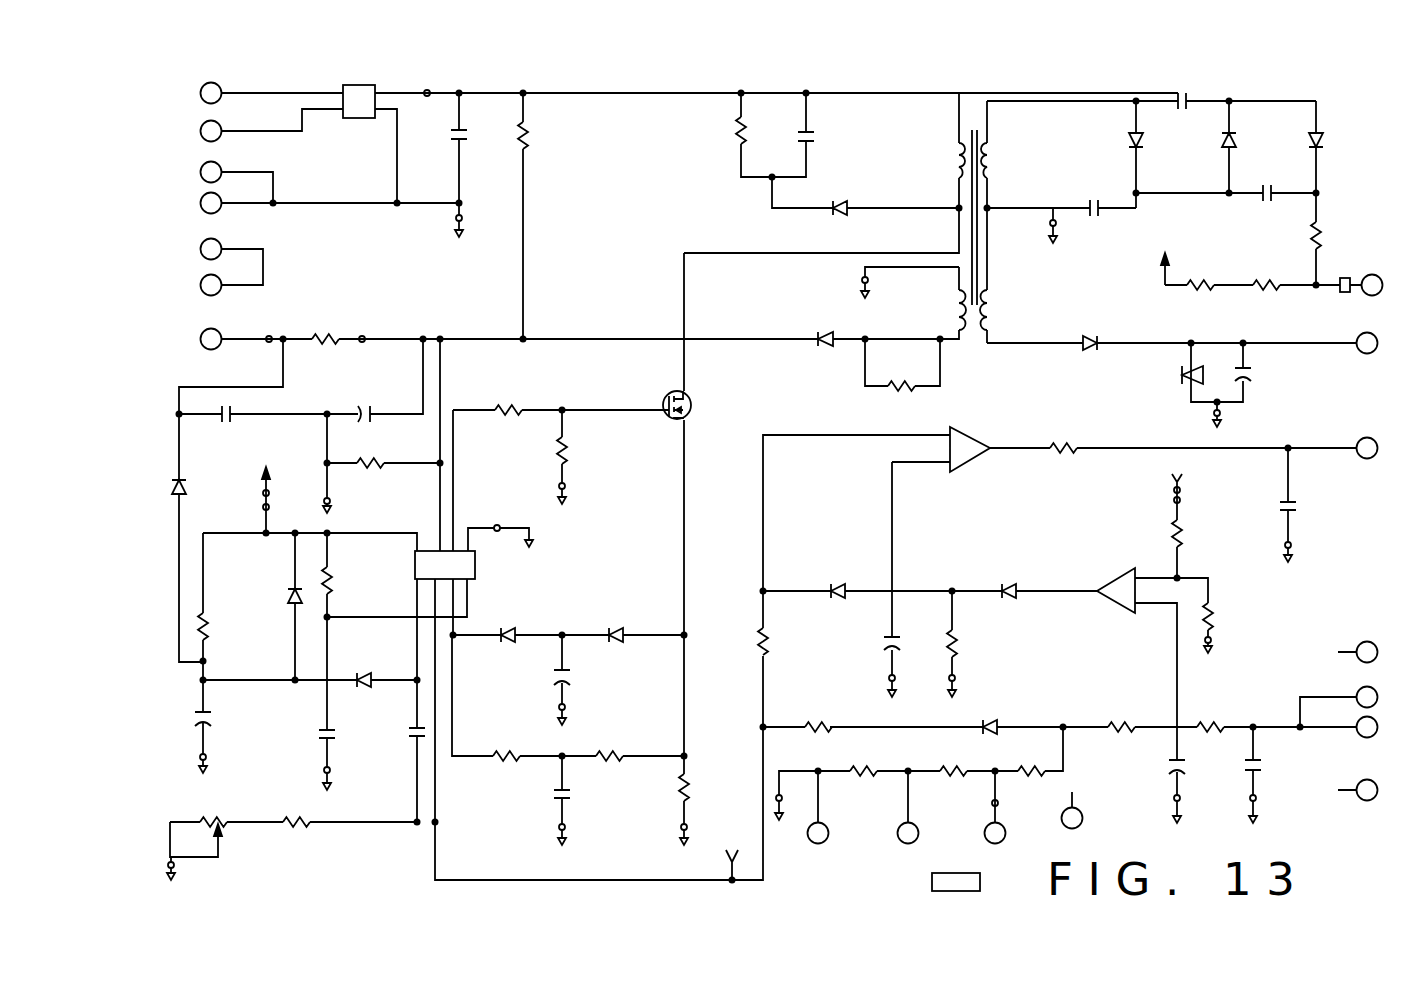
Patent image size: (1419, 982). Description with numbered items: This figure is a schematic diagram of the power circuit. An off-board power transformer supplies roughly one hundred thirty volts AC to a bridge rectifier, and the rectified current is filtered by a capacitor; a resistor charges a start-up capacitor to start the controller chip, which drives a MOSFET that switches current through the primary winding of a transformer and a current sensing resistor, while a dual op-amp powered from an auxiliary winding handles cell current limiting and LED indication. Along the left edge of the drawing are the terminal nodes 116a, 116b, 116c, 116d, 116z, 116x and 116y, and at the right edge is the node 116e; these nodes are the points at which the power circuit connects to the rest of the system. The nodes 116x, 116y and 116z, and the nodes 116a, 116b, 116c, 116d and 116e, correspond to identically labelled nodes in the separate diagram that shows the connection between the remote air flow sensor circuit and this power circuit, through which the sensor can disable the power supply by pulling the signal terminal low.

The node 116a is at (218, 85).
The node 116b is at (218, 123).
The node 116c is at (216, 240).
The node 116d is at (218, 165).
The node 116e is at (1372, 737).
The node 116x is at (216, 293).
The node 116y is at (209, 349).
The node 116z is at (216, 212).